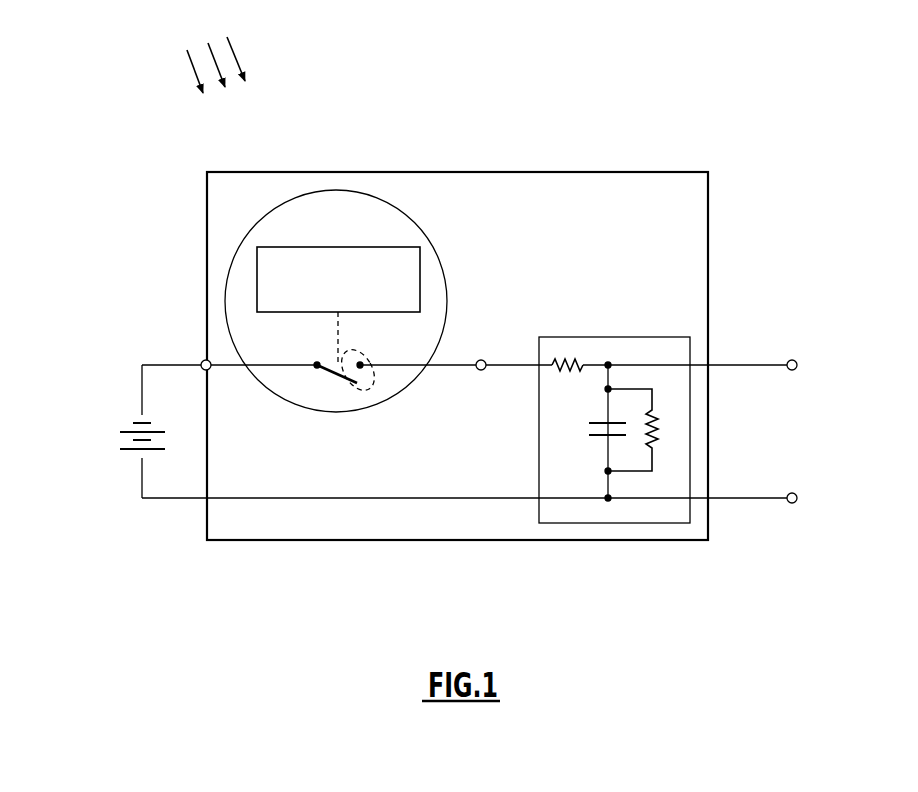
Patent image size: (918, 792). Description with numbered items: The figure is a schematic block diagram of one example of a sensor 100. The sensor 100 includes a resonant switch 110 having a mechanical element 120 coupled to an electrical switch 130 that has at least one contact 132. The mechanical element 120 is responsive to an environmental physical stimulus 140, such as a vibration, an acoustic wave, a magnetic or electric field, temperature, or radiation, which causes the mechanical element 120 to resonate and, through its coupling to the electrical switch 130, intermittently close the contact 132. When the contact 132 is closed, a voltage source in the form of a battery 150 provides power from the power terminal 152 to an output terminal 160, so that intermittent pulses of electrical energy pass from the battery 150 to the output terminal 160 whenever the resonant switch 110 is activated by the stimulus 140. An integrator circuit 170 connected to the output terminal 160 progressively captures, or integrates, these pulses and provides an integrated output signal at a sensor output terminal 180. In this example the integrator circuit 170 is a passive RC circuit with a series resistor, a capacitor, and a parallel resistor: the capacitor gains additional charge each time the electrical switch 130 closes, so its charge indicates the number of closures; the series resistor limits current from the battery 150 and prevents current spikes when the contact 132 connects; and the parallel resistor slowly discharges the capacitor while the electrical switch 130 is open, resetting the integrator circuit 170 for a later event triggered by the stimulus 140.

The sensor 100 is at (492, 299).
The resonant switch 110 is at (423, 233).
The mechanical element 120 is at (352, 247).
The electrical switch 130 is at (326, 362).
The contact 132 is at (371, 356).
The environmental physical stimulus 140 is at (238, 62).
The battery 150 is at (125, 421).
The power terminal 152 is at (203, 362).
The output terminal 160 is at (481, 360).
The integrator circuit 170 is at (612, 337).
The sensor output terminal 180 is at (797, 370).